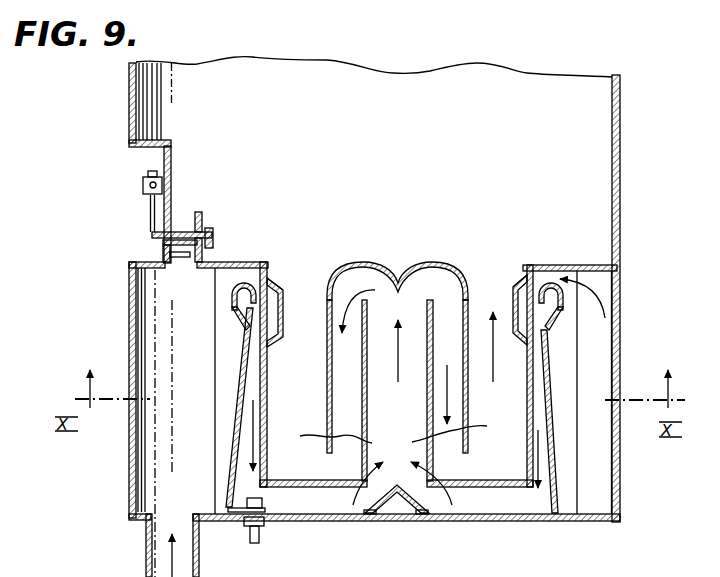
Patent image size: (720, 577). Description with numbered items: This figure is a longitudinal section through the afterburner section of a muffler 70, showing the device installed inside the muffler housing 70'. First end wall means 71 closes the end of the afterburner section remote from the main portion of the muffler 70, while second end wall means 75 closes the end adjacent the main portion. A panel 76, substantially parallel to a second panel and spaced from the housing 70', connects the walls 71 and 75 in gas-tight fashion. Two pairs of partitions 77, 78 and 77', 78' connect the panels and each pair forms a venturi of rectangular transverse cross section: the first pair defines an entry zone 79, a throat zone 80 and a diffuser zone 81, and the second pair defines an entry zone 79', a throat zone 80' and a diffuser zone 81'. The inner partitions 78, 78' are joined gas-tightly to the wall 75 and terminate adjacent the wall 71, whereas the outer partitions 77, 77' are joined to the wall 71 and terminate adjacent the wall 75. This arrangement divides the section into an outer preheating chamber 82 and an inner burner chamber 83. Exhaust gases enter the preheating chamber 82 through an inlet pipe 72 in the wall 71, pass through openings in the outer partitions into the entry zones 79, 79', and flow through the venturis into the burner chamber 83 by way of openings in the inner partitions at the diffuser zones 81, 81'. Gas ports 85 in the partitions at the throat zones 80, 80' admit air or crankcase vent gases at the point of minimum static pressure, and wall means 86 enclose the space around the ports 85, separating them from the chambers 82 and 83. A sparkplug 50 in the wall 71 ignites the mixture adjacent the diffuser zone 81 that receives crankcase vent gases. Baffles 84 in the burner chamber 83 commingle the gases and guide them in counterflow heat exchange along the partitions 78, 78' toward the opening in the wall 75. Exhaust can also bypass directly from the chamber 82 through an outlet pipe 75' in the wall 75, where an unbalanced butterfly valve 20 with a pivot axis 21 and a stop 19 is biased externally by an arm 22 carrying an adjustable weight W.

The adjustable weight W is at (143, 184).
The stop 19 is at (182, 258).
The unbalanced butterfly valve 20 is at (162, 249).
The pivot axis 21 is at (214, 237).
The arm 22 is at (150, 205).
The sparkplug 50 is at (262, 536).
The muffler 70 is at (640, 298).
The muffler housing 70' is at (636, 364).
The first end wall means 71 is at (470, 524).
The inlet pipe 72 is at (199, 572).
The second end wall means 75 is at (406, 254).
The outlet pipe 75' is at (220, 214).
The panel 76 is at (215, 470).
The outer partition 77 is at (235, 407).
The outer partition 77' is at (572, 421).
The inner partition 78 is at (313, 374).
The inner partition 78' is at (480, 376).
The entry zone 79 is at (289, 274).
The entry zone 79' is at (544, 260).
The throat zone 80 is at (289, 312).
The throat zone 80' is at (506, 306).
The diffuser zone 81 is at (275, 435).
The diffuser zone 81' is at (514, 459).
The outer preheating chamber 82 is at (630, 364).
The inner burner chamber 83 is at (374, 357).
The baffles 84 is at (393, 439).
The gas ports 85 is at (258, 303).
The wall means 86 is at (281, 338).